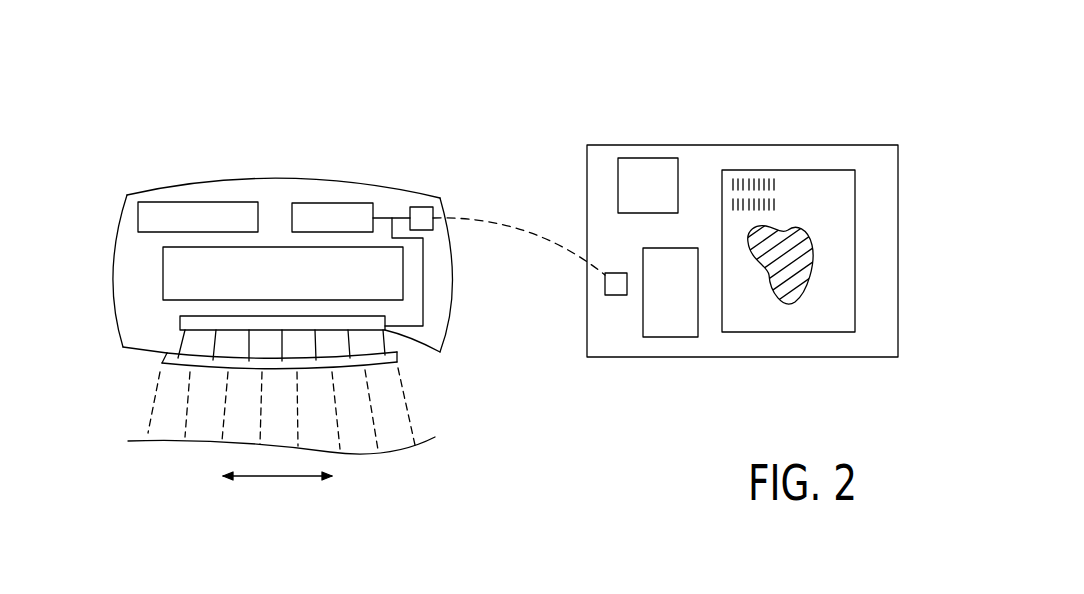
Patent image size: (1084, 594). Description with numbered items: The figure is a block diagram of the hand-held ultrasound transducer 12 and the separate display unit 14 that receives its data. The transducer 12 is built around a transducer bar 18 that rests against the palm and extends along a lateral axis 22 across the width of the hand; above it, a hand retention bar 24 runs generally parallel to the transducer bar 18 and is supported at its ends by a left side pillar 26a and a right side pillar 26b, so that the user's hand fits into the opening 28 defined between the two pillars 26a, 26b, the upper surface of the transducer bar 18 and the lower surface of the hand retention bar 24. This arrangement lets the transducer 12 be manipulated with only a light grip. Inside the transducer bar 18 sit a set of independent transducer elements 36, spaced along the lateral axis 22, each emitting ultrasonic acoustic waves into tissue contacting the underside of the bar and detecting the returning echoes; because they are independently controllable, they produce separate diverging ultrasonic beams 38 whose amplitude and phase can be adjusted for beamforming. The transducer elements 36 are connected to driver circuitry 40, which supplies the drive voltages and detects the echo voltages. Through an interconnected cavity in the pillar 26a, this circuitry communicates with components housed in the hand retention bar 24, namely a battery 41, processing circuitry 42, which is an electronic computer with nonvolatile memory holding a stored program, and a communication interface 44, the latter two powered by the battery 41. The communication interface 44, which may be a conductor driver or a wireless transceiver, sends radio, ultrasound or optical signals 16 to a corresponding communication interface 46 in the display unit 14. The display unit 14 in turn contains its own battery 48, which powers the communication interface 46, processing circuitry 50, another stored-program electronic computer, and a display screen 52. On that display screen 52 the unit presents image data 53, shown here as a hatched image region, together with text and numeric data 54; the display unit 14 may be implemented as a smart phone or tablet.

The ultrasound transducer 12 is at (433, 87).
The display unit 14 is at (577, 132).
The signals 16 is at (523, 238).
The transducer bar 18 is at (108, 338).
The lateral axis 22 is at (278, 478).
The hand retention bar 24 is at (113, 195).
The left side pillar 26a is at (130, 302).
The right side pillar 26b is at (443, 282).
The opening 28 is at (200, 295).
The transducer elements 36 is at (225, 352).
The diverging ultrasonic beams 38 is at (208, 422).
The driver circuitry 40 is at (388, 330).
The battery 41 is at (203, 210).
The processing circuitry 42 is at (330, 212).
The communication interface 44 is at (420, 213).
The communication interface 46 is at (612, 297).
The battery 48 is at (656, 309).
The processing circuitry 50 is at (634, 199).
The display screen 52 is at (780, 188).
The image data 53 is at (812, 245).
The text and numeric data 54 is at (807, 188).